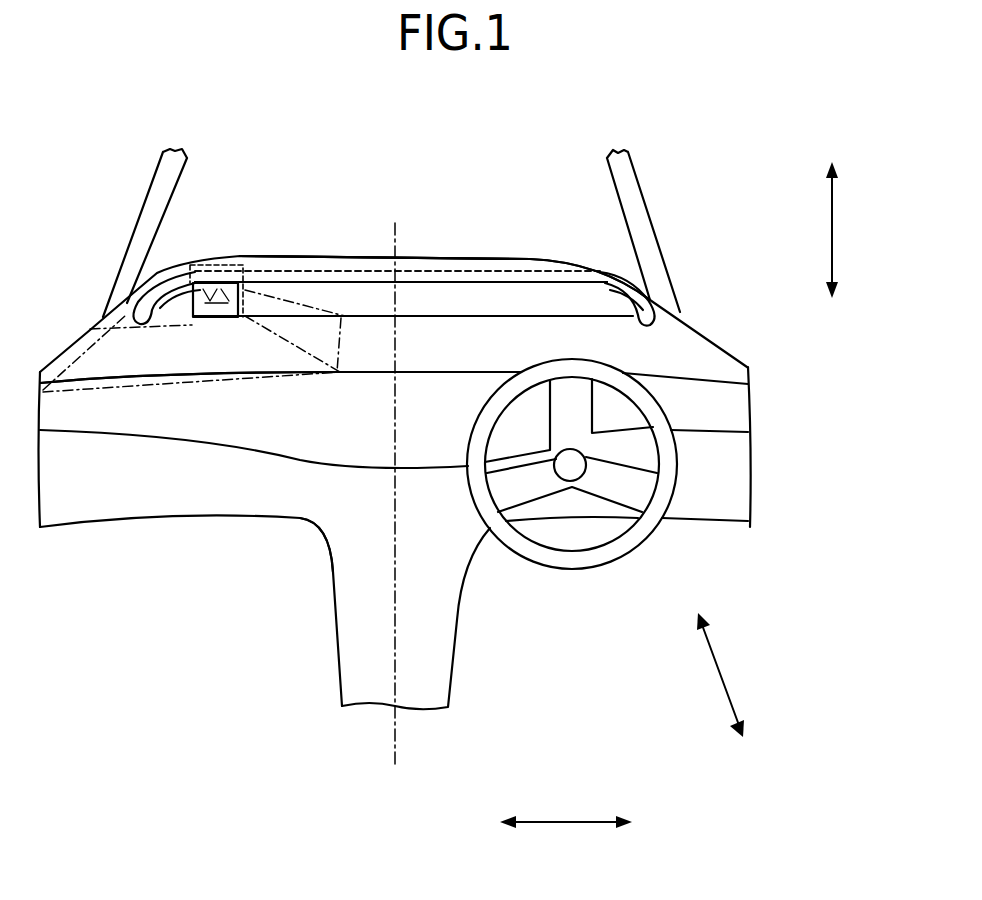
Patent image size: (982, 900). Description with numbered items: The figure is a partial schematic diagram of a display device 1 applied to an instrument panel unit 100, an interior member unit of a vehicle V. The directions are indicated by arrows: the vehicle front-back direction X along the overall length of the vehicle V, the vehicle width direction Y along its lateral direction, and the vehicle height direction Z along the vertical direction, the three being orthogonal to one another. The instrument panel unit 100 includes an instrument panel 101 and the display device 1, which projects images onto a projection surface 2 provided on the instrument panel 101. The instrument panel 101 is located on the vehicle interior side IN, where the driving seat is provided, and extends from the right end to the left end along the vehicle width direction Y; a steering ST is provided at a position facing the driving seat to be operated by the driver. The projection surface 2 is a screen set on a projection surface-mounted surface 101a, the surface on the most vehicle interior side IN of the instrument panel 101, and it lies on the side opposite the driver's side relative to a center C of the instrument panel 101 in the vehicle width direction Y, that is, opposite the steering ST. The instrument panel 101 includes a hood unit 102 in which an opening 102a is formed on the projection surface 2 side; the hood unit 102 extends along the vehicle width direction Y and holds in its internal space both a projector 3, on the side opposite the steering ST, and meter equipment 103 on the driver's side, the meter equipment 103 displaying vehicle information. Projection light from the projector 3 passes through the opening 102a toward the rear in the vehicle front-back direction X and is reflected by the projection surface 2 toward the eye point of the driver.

The vehicle V is at (128, 190).
The display device 1 is at (240, 250).
The projection surface 2 is at (217, 355).
The projector 3 is at (213, 267).
The instrument panel unit 100 is at (290, 178).
The instrument panel 101 is at (415, 322).
The projection surface-mounted surface 101a is at (357, 348).
The hood unit 102 is at (450, 260).
The opening 102a is at (546, 282).
The meter equipment 103 is at (493, 300).
The vehicle interior side IN is at (249, 634).
The steering ST is at (569, 570).
The center C is at (396, 745).
The vehicle front-back direction X is at (720, 673).
The vehicle width direction Y is at (568, 826).
The vehicle height direction Z is at (836, 230).